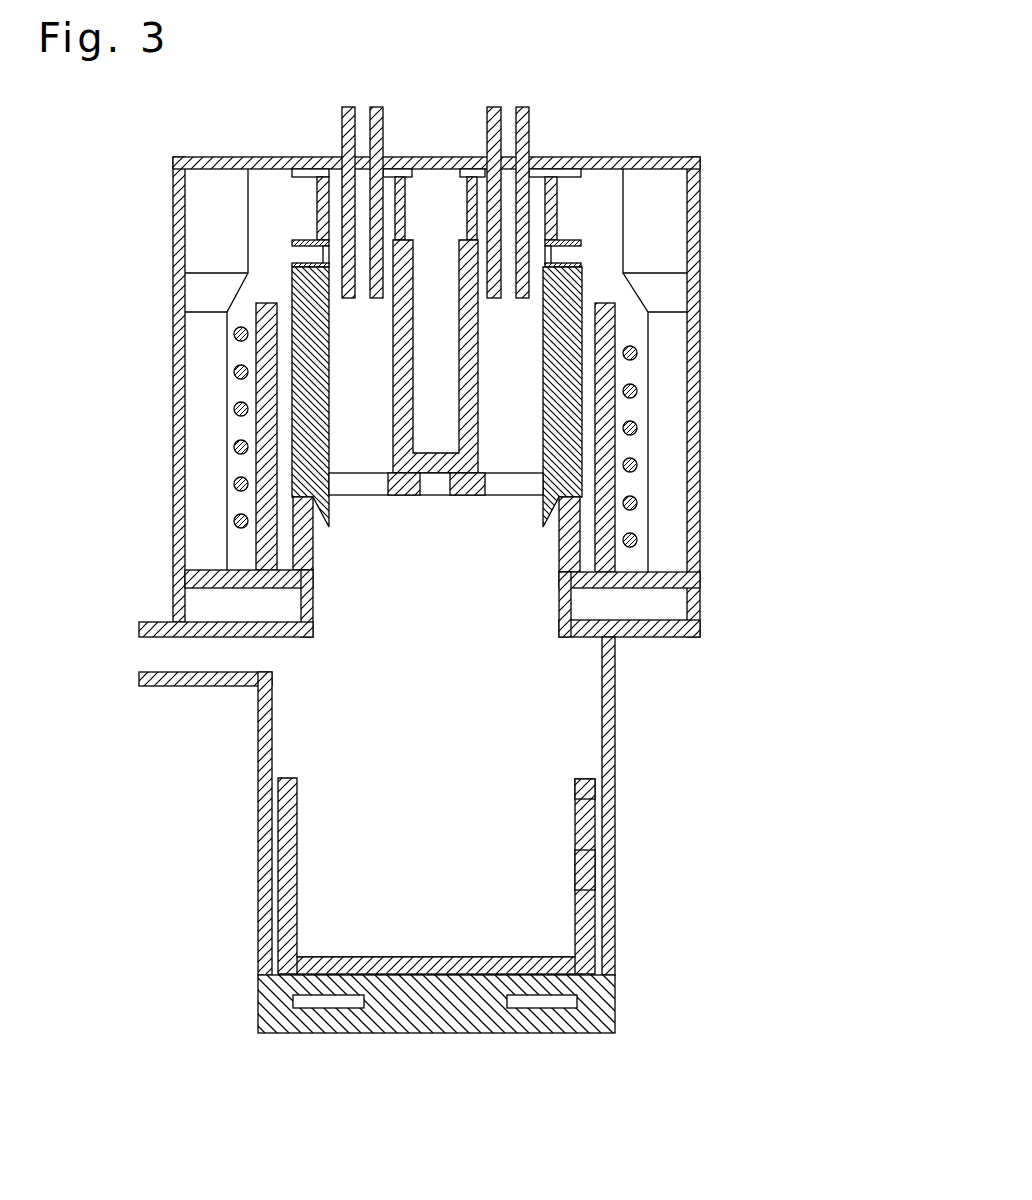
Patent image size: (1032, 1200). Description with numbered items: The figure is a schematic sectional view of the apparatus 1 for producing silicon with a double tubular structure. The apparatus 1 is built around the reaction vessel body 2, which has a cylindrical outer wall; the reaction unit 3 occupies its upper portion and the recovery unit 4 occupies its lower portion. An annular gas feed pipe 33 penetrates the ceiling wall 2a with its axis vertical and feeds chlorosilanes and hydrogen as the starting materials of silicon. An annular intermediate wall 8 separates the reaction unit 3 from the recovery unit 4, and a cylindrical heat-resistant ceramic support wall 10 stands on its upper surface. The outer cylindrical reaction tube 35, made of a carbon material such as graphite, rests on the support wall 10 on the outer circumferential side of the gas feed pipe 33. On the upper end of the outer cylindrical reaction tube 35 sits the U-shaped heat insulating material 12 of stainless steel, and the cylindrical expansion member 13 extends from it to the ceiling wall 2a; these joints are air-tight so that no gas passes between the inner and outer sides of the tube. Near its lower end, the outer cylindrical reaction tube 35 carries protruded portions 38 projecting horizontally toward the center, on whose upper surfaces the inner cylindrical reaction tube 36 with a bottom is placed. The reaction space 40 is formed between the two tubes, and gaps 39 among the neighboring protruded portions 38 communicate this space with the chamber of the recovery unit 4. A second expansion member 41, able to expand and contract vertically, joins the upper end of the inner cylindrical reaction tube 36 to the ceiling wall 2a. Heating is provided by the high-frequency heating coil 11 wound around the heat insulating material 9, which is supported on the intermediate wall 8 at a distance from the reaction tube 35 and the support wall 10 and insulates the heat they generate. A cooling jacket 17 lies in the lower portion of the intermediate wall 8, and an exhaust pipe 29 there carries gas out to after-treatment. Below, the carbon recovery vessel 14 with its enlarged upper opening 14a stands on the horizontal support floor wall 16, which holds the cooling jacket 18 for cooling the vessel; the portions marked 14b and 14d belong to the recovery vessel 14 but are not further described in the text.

The apparatus for producing silicon 1 is at (676, 66).
The reaction vessel body 2 is at (701, 197).
The ceiling wall 2a is at (641, 157).
The reaction unit 3 is at (702, 290).
The recovery unit 4 is at (617, 760).
The intermediate wall 8 is at (562, 608).
The heat insulating material 9 is at (278, 531).
The support wall 10 is at (312, 573).
The high-frequency heating coil 11 is at (639, 392).
The heat insulating material 12 is at (557, 242).
The expansion member 13 is at (317, 206).
The recovery vessel 14 is at (300, 844).
The opening 14a is at (582, 780).
The crucible bottom 14b is at (395, 957).
The crucible side wall 14d is at (597, 870).
The support floor wall 16 is at (582, 1004).
The cooling jacket 17 is at (680, 606).
The cooling jacket 18 is at (300, 1003).
The exhaust pipe 29 is at (183, 688).
The gas feed pipe 33 is at (383, 128).
The outer cylindrical reaction tube 35 is at (331, 377).
The inner cylindrical reaction tube 36 is at (478, 405).
The protruded portions 38 is at (470, 495).
The gaps 39 is at (510, 495).
The reaction space 40 is at (524, 369).
The expansion member 41 is at (405, 198).